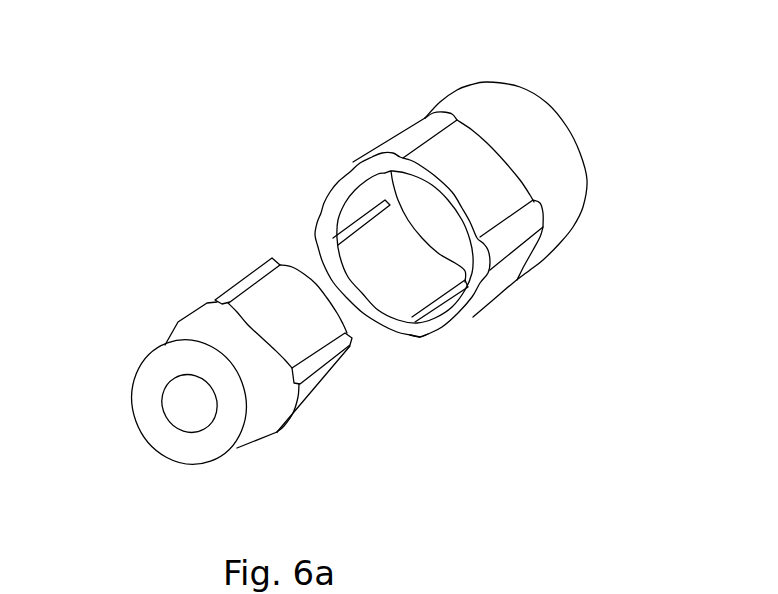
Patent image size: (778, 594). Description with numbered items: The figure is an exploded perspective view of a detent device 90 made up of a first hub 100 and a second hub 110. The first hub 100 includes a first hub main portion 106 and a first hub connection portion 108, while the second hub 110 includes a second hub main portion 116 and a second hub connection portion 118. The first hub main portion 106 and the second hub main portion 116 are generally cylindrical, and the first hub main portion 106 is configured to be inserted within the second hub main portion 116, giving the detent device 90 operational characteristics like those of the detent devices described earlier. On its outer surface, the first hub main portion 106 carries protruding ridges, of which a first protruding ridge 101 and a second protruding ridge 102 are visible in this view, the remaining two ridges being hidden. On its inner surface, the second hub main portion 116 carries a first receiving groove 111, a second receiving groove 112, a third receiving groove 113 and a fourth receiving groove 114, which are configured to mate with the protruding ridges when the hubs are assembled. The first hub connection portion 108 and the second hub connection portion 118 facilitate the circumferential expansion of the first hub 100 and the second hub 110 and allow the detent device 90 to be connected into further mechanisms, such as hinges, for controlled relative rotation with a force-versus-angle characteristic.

The detent device 90 is at (218, 193).
The first hub 100 is at (195, 339).
The first protruding ridge 101 is at (241, 285).
The second protruding ridge 102 is at (323, 355).
The first hub main portion 106 is at (290, 315).
The first hub connection portion 108 is at (253, 385).
The second hub 110 is at (517, 127).
The first receiving groove 111 is at (380, 193).
The second receiving groove 112 is at (448, 258).
The third receiving groove 113 is at (422, 322).
The fourth receiving groove 114 is at (345, 235).
The second hub main portion 116 is at (488, 188).
The second hub connection portion 118 is at (563, 185).